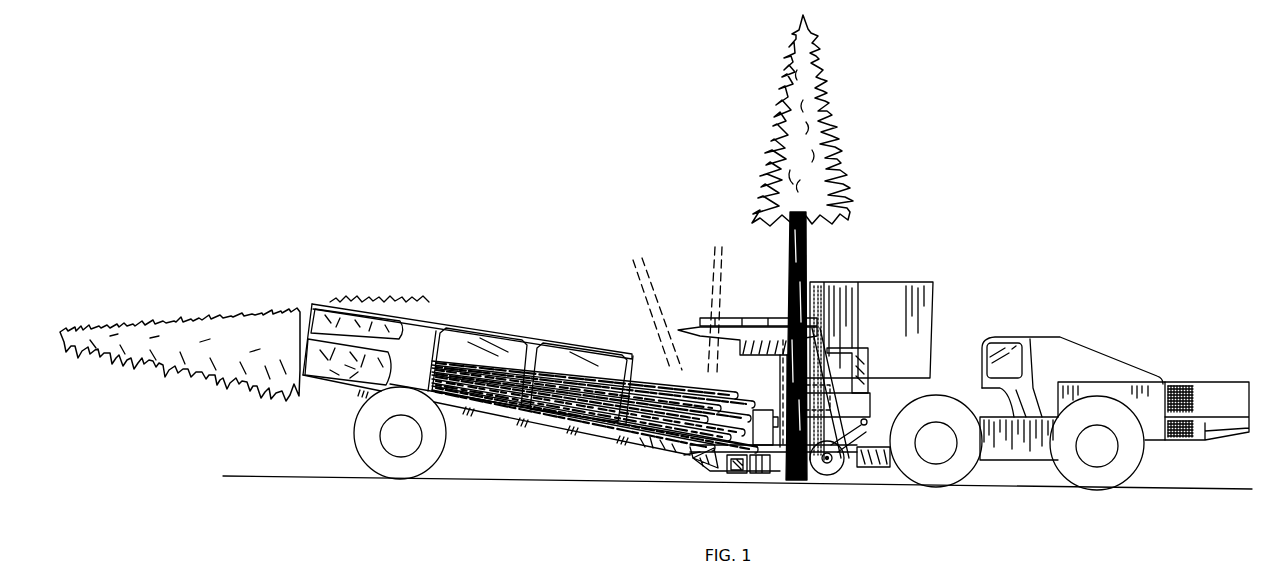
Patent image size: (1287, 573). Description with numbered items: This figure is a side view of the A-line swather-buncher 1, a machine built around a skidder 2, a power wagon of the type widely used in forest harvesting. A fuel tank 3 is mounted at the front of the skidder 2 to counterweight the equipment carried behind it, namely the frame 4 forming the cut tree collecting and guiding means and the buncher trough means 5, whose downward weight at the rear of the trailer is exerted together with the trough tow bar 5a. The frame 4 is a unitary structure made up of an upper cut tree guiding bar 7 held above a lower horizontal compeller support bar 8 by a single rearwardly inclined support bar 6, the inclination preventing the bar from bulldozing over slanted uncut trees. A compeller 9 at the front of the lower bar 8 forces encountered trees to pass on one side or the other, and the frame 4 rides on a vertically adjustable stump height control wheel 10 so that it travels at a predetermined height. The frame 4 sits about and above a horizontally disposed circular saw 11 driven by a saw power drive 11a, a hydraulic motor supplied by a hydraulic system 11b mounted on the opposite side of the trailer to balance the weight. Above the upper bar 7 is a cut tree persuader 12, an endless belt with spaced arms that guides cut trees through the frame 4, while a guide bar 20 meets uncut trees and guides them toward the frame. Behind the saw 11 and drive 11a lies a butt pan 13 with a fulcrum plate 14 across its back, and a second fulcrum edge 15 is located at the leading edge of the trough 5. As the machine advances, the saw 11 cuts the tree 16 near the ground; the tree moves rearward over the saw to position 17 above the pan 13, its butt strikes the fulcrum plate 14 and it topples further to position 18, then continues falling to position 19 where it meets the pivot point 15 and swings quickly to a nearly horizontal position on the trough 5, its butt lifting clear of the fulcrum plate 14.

The A-line swather-buncher 1 is at (1049, 306).
The skidder 2 is at (981, 361).
The fuel tank 3 is at (1198, 383).
The frame 4 is at (773, 310).
The trough means 5 is at (524, 326).
The trough tow bar 5a is at (678, 446).
The rearwardly inclined support bar 6 is at (820, 346).
The upper cut tree guiding bar 7 is at (728, 337).
The lower horizontal compeller support bar 8 is at (777, 458).
The compeller 9 is at (842, 462).
The stump height control wheel 10 is at (842, 452).
The circular saw 11 is at (756, 478).
The saw power drive 11a is at (762, 381).
The hydraulic system 11b is at (869, 321).
The cut tree persuader 12 is at (753, 319).
The butt pan 13 is at (724, 474).
The fulcrum plate 14 is at (694, 463).
The second fulcrum edge 15 is at (629, 436).
The tree 16 is at (804, 262).
The tree position 17 is at (723, 256).
The tree position 18 is at (648, 297).
The tree position 19 is at (577, 362).
The guide bar 20 is at (856, 348).